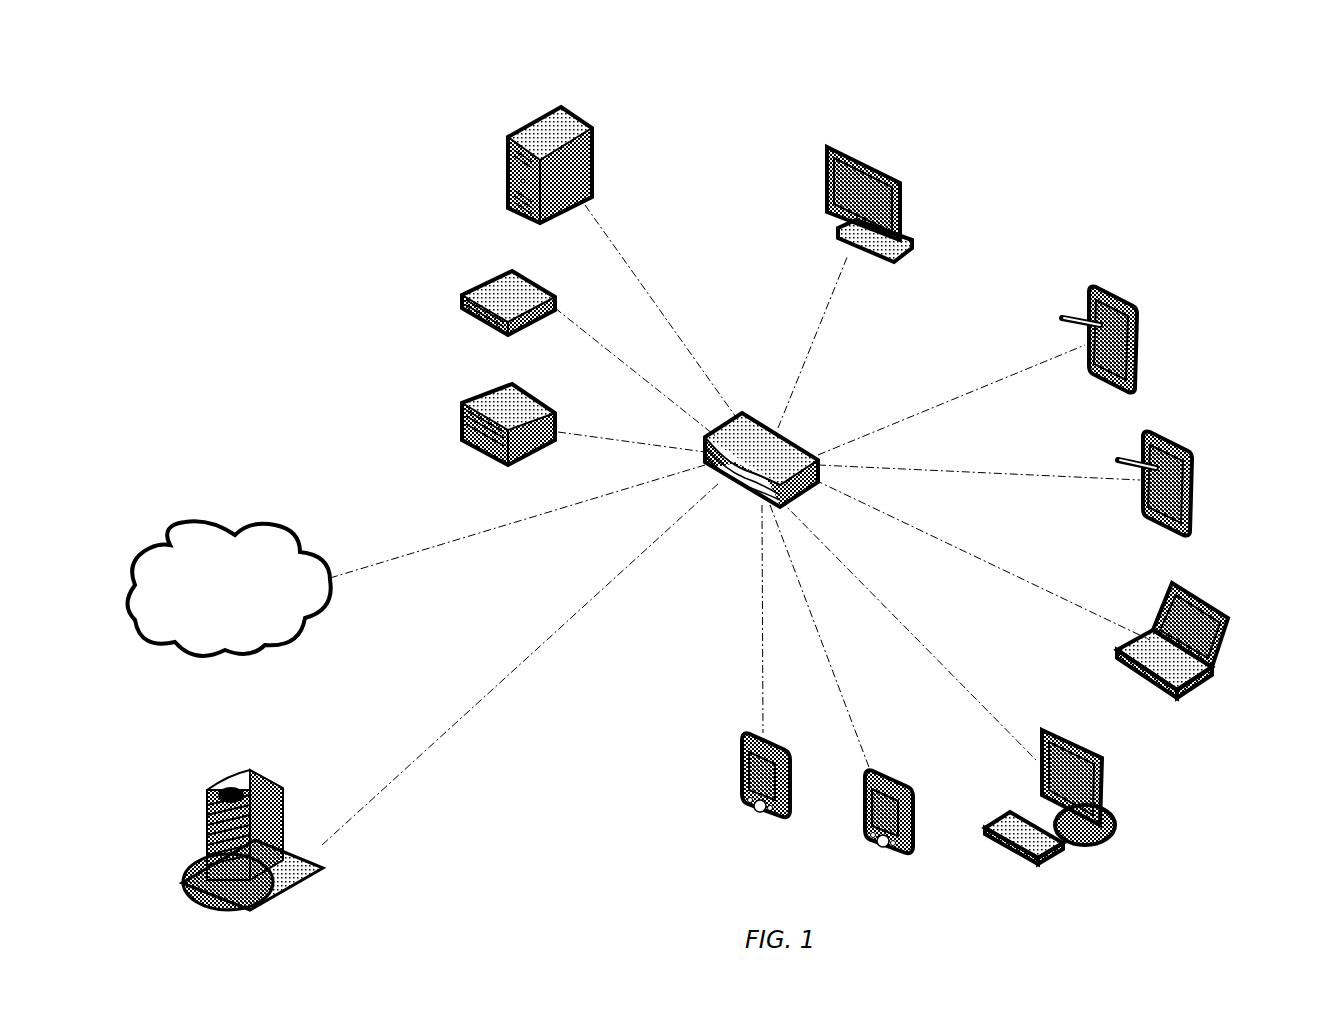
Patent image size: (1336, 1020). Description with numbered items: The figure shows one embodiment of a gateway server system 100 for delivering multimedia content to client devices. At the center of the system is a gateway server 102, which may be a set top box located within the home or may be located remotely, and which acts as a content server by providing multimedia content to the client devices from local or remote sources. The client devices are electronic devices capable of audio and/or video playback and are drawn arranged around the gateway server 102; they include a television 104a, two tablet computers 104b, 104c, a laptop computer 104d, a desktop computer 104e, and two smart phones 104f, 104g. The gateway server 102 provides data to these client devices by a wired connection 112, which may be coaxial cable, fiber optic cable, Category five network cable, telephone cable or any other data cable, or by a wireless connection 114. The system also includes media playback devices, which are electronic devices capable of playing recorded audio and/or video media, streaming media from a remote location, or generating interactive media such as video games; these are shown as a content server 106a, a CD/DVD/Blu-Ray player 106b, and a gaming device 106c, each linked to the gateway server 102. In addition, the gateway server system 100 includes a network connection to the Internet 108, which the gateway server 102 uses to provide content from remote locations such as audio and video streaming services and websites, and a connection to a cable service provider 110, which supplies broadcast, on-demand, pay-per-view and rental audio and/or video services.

The gateway server system 100 is at (228, 82).
The gateway server 102 is at (700, 440).
The television 104a is at (895, 180).
The tablet computer 104b is at (1120, 295).
The tablet computer 104c is at (1182, 446).
The laptop computer 104d is at (1215, 600).
The desktop computer 104e is at (1108, 760).
The smart phone 104f is at (900, 862).
The smart phone 104g is at (765, 820).
The content server 106a is at (518, 128).
The CD/DVD/Blu-Ray player 106b is at (470, 292).
The gaming device 106c is at (468, 410).
The Internet 108 is at (180, 527).
The cable service provider 110 is at (210, 790).
The wired connection 112 is at (805, 315).
The wireless connection 114 is at (965, 385).